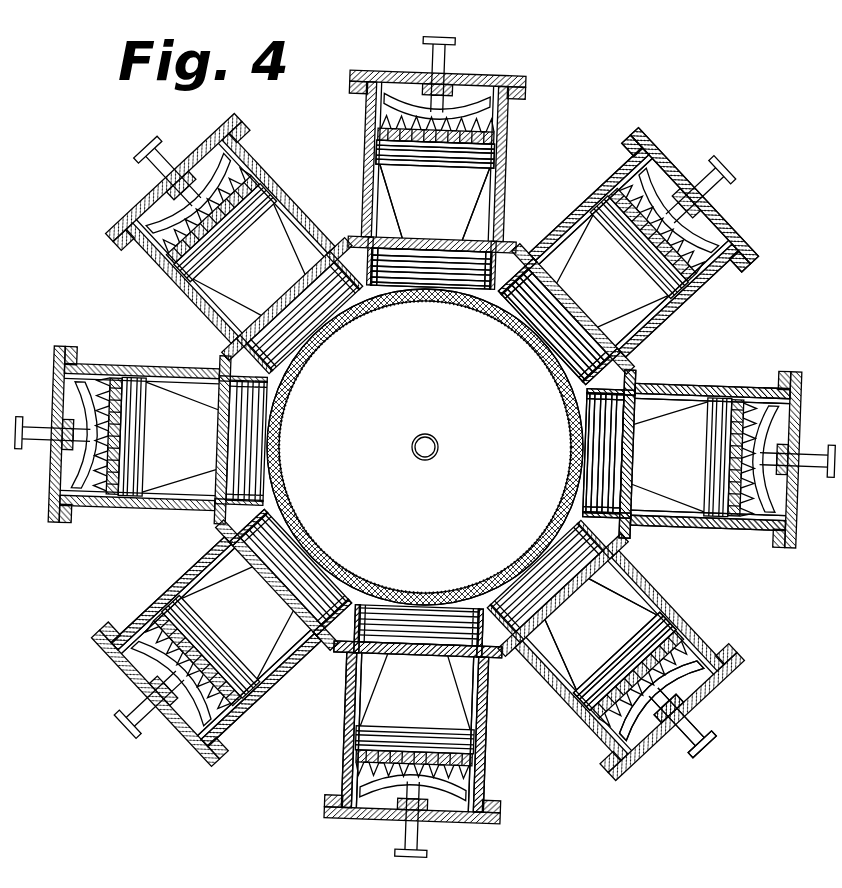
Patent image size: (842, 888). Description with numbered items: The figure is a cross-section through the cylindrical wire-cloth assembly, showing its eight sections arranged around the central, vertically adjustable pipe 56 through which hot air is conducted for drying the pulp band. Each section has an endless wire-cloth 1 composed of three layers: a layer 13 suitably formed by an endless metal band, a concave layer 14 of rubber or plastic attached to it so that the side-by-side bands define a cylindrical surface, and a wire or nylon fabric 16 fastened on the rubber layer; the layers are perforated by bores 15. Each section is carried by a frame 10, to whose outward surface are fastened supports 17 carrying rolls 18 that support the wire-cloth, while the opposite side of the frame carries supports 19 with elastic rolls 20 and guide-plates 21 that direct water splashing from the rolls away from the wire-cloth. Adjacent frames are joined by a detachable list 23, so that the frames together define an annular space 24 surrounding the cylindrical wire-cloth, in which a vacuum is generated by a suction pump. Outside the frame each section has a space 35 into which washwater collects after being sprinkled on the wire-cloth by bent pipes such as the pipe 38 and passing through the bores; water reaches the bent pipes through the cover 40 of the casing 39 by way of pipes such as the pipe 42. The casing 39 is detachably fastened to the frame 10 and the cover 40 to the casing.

The endless wire-cloth 1 is at (468, 300).
The frame 10 is at (648, 513).
The layer nearest the drive-roll and return-roll 13 is at (540, 370).
The layer of rubber or plastic substance 14 is at (517, 337).
The bores 15 is at (568, 465).
The wire or nylon fabric 16 is at (403, 300).
The supports 17 is at (608, 573).
The rolls 18 is at (640, 657).
The supports 19 is at (513, 657).
The elastic rolls 20 is at (350, 668).
The guide-plates 21 is at (298, 670).
The detachable list 23 is at (627, 372).
The annular space 24 is at (503, 268).
The space 35 is at (402, 175).
The bent pipe 38 is at (688, 675).
The casing 39 is at (720, 267).
The cover 40 is at (655, 150).
The pipe 42 is at (702, 745).
The pipe 56 is at (412, 447).